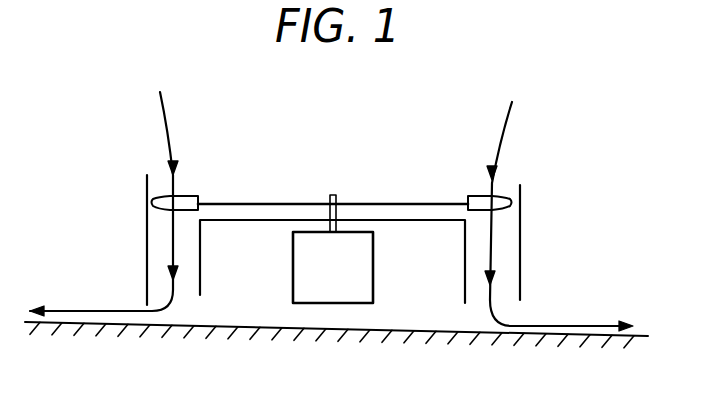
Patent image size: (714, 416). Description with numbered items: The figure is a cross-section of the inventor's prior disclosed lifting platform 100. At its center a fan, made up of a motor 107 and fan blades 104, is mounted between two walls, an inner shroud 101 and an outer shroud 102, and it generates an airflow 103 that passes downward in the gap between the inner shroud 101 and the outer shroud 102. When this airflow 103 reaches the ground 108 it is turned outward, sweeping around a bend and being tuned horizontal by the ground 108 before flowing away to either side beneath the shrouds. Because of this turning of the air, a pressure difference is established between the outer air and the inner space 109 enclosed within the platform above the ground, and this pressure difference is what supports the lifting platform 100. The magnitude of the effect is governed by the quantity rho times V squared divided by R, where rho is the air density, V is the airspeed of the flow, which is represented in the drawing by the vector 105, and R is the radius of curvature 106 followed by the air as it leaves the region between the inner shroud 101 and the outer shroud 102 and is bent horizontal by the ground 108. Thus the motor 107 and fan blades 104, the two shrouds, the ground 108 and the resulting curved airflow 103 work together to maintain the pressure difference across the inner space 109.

The lifting platform 100 is at (654, 109).
The inner shroud 101 is at (519, 238).
The outer shroud 102 is at (520, 290).
The airflow 103 is at (176, 179).
The fan blades 104 is at (200, 201).
The vector 105 is at (165, 98).
The radius of curvature 106 is at (152, 307).
The motor 107 is at (375, 279).
The ground 108 is at (248, 331).
The inner space 109 is at (258, 281).